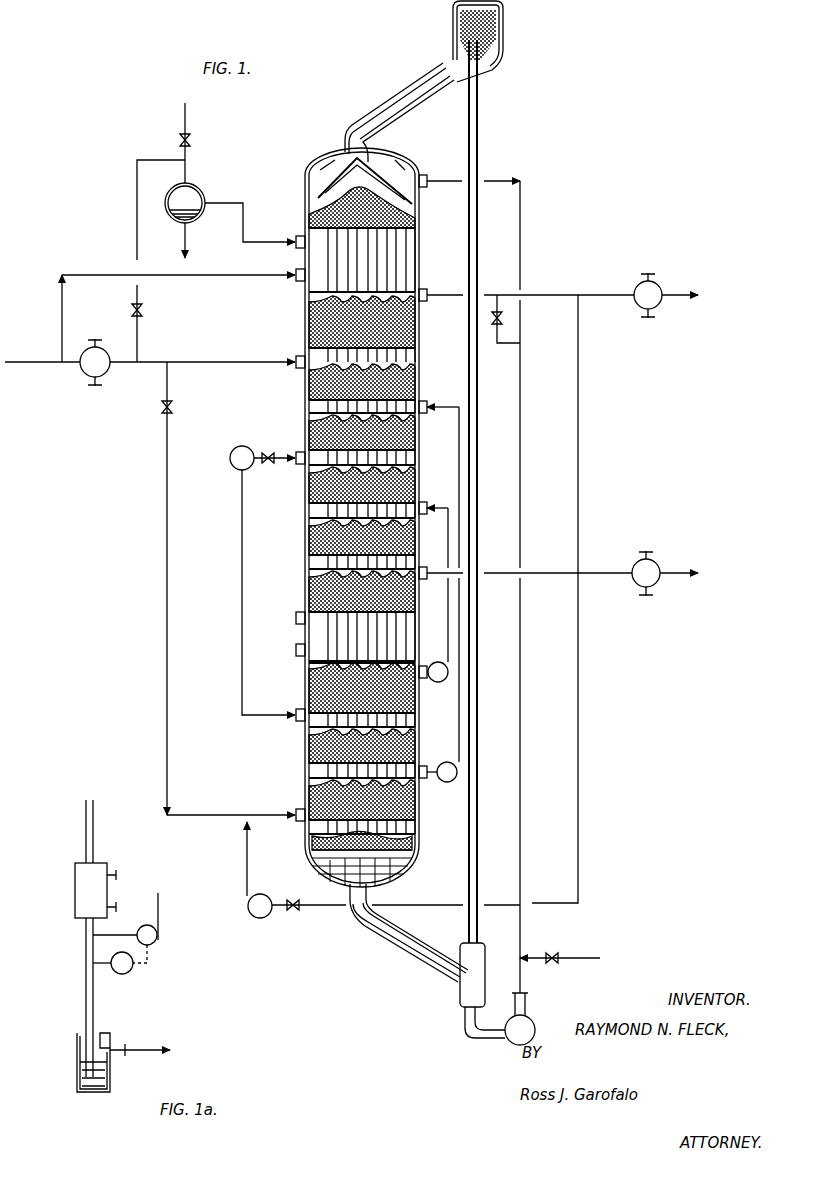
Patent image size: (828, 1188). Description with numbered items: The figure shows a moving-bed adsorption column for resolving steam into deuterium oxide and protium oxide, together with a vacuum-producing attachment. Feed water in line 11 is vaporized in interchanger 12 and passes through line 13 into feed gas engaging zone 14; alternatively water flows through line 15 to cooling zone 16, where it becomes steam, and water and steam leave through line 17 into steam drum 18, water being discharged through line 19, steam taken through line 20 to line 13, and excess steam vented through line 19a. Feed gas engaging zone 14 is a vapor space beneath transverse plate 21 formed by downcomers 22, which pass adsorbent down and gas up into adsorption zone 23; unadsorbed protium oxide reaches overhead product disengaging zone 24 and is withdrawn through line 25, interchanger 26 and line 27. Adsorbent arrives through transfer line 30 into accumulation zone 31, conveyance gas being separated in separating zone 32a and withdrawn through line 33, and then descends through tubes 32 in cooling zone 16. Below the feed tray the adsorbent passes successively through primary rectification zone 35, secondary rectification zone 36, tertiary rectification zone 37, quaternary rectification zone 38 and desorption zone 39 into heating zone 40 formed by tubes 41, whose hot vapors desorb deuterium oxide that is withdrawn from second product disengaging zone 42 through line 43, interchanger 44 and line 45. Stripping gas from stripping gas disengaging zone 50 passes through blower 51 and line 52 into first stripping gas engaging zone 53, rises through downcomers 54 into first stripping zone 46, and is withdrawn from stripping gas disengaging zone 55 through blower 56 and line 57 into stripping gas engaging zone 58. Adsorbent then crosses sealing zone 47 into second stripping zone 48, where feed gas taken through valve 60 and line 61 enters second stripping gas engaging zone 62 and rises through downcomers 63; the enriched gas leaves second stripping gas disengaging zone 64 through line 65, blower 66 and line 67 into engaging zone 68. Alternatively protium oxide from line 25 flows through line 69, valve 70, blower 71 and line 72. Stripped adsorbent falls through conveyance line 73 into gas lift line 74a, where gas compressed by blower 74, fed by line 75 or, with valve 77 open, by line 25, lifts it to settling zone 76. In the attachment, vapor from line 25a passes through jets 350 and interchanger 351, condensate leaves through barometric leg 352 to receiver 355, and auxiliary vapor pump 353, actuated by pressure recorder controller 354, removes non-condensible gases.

In FIG. 1, the feed water line 11 is at (30, 366).
In FIG. 1, the interchanger 12 is at (85, 376).
In FIG. 1, the feed steam line 13 is at (215, 368).
In FIG. 1, the feed gas engaging zone 14 is at (299, 372).
In FIG. 1, the cooling water line 15 is at (62, 305).
In FIG. 1, the cooling zone 16 is at (297, 257).
In FIG. 1, the water and steam discharge line 17 is at (282, 240).
In FIG. 1, the steam drum 18 is at (205, 190).
In FIG. 1, the water discharge line 19 is at (190, 233).
In FIG. 1, the excess steam discharge line 19a is at (192, 118).
In FIG. 1, the steam line 20 is at (153, 160).
In FIG. 1, the transverse plate 21 is at (415, 345).
In FIG. 1, the downcomers 22 is at (416, 355).
In FIG. 1, the adsorption zone 23 is at (308, 318).
In FIG. 1, the overhead product disengaging zone 24 is at (415, 290).
In FIG. 1, the protium oxide product line 25 is at (540, 295).
In FIG. 1A, the protium oxide vapor line 25a is at (93, 842).
In FIG. 1, the interchanger 26 is at (656, 288).
In FIG. 1, the protium oxide storage line 27 is at (666, 303).
In FIG. 1, the transfer line 30 is at (383, 100).
In FIG. 1, the accumulation zone 31 is at (380, 214).
In FIG. 1, the tubes 32 is at (395, 246).
In FIG. 1, the separating zone 32a is at (398, 180).
In FIG. 1, the conveyance gas withdrawal line 33 is at (440, 178).
In FIG. 1, the primary rectification zone 35 is at (382, 385).
In FIG. 1, the secondary rectification zone 36 is at (380, 436).
In FIG. 1, the tertiary rectification zone 37 is at (372, 487).
In FIG. 1, the quaternary rectification zone 38 is at (303, 552).
In FIG. 1, the desorption zone 39 is at (303, 600).
In FIG. 1, the heating zone 40 is at (416, 632).
In FIG. 1, the tubes 41 is at (302, 642).
In FIG. 1, the second product disengaging zone 42 is at (303, 578).
In FIG. 1, the deuterium oxide production line 43 is at (530, 574).
In FIG. 1, the interchanger 44 is at (652, 566).
In FIG. 1, the deuterium oxide storage line 45 is at (663, 583).
In FIG. 1, the first stripping zone 46 is at (385, 700).
In FIG. 1, the sealing zone 47 is at (382, 746).
In FIG. 1, the second stripping zone 48 is at (302, 819).
In FIG. 1, the stripping gas disengaging zone 50 is at (300, 452).
In FIG. 1, the blower 51 is at (240, 450).
In FIG. 1, the stripping gas line 52 is at (246, 542).
In FIG. 1, the first stripping gas engaging zone 53 is at (301, 726).
In FIG. 1, the downcomers 54 is at (416, 725).
In FIG. 1, the stripping gas disengaging zone 55 is at (301, 668).
In FIG. 1, the blower 56 is at (449, 676).
In FIG. 1, the stripping gas return line 57 is at (447, 524).
In FIG. 1, the stripping gas engaging zone 58 is at (306, 505).
In FIG. 1, the valve 60 is at (160, 406).
In FIG. 1, the feed stripping gas line 61 is at (166, 608).
In FIG. 1, the second stripping gas engaging zone 62 is at (404, 831).
In FIG. 1, the downcomers 63 is at (305, 846).
In FIG. 1, the second stripping gas disengaging zone 64 is at (303, 778).
In FIG. 1, the stripping gas withdrawal line 65 is at (440, 780).
In FIG. 1, the blower 66 is at (456, 773).
In FIG. 1, the stripping gas line 67 is at (460, 645).
In FIG. 1, the engaging zone 68 is at (303, 408).
In FIG. 1, the stripping gas withdrawal line 69 is at (578, 460).
In FIG. 1, the valve 70 is at (298, 914).
In FIG. 1, the blower 71 is at (253, 918).
In FIG. 1, the stripping gas line 72 is at (246, 876).
In FIG. 1, the conveyance line 73 is at (385, 945).
In FIG. 1, the blower 74 is at (505, 1045).
In FIG. 1, the gas lift line 74a is at (478, 872).
In FIG. 1, the lifting gas line 75 is at (528, 986).
In FIG. 1, the settling zone 76 is at (494, 32).
In FIG. 1, the valve 77 is at (506, 320).
In FIG. 1A, the jets 350 is at (88, 882).
In FIG. 1A, the interchanger 351 is at (118, 890).
In FIG. 1A, the barometric leg 352 is at (90, 1002).
In FIG. 1A, the auxiliary vapor pump 353 is at (160, 936).
In FIG. 1A, the pressure recorder controller 354 is at (128, 980).
In FIG. 1A, the receiver 355 is at (80, 1058).